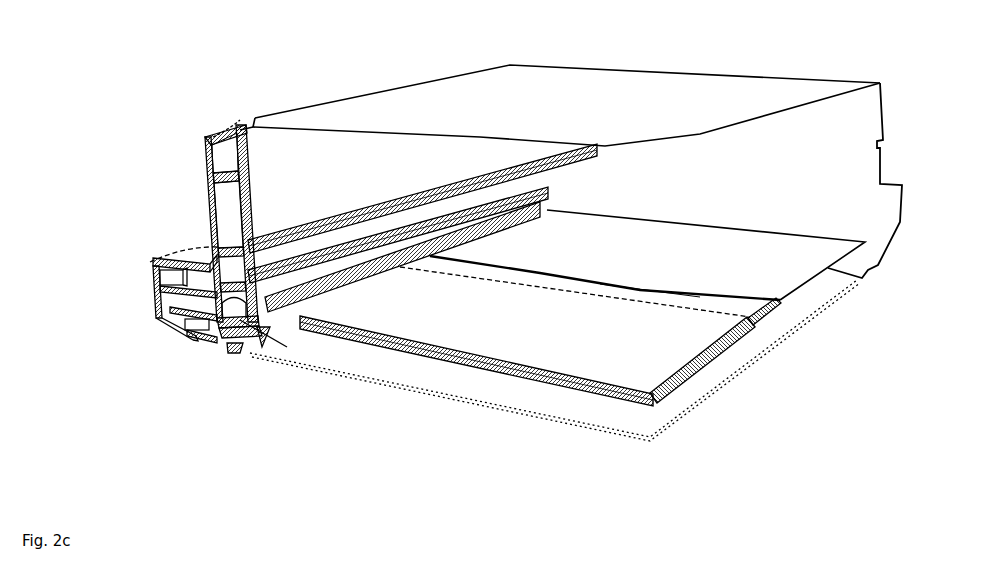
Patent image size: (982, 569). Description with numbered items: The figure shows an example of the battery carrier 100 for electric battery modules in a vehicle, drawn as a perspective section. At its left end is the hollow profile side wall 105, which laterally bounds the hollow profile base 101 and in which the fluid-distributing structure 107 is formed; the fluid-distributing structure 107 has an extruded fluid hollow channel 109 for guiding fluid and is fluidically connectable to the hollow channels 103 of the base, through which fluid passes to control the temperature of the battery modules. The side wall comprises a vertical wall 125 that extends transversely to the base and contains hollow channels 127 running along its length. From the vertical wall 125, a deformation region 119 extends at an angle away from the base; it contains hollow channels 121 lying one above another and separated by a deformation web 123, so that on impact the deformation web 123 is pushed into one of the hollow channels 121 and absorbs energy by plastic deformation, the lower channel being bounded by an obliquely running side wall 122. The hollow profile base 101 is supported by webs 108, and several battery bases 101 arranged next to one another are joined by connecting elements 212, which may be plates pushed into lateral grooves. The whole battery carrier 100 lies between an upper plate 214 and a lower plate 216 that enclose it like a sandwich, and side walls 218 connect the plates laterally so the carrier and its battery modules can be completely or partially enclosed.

The battery carrier 100 is at (222, 103).
The hollow profile base 101 is at (582, 308).
The hollow channels 103 is at (660, 390).
The hollow profile side wall 105 is at (157, 195).
The fluid-distributing structure 107 is at (228, 358).
The web 108 is at (300, 307).
The fluid hollow channel 109 is at (248, 348).
The deformation region 119 is at (160, 248).
The hollow channels 121 is at (193, 283).
The side wall 122 is at (173, 325).
The deformation web 123 is at (170, 307).
The vertical wall 125 is at (205, 157).
The hollow channel 127 is at (227, 162).
The connecting elements 212 is at (680, 290).
The plate 214 is at (433, 102).
The plate 216 is at (460, 383).
The side walls 218 is at (863, 122).